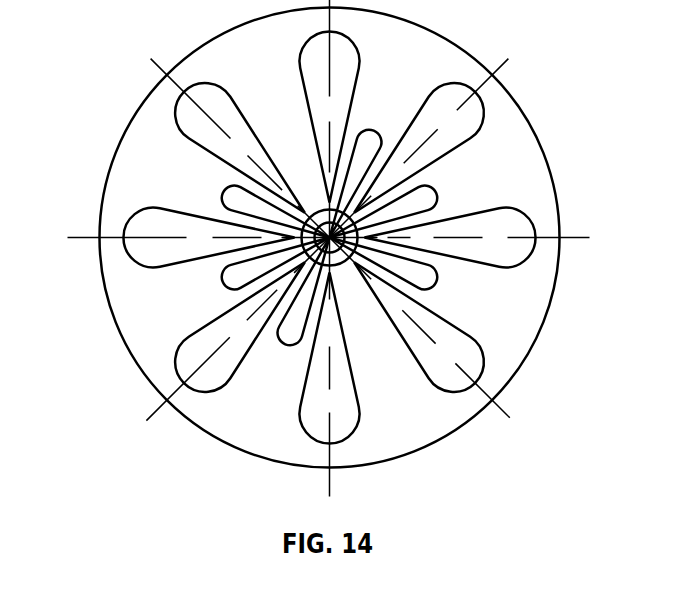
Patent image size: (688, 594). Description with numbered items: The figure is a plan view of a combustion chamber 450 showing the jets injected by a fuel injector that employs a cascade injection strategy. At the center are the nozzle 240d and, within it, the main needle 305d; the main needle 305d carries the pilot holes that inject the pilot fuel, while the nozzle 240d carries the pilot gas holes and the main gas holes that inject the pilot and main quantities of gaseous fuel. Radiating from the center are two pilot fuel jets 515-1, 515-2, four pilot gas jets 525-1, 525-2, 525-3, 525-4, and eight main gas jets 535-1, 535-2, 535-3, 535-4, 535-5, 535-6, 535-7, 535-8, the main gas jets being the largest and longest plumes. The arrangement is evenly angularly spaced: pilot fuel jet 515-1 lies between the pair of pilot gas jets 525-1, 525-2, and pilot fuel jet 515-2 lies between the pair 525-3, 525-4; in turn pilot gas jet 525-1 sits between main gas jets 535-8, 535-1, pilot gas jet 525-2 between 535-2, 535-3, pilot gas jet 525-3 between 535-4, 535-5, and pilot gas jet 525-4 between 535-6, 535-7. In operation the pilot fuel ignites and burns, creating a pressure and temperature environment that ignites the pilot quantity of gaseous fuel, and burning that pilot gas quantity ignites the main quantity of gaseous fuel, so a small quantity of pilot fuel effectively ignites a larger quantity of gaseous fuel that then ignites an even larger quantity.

The rotor assembly 450 is at (384, 456).
The nozzle 240d is at (325, 232).
The main needle 305d is at (333, 245).
The main gas jet 535-1 is at (467, 208).
The main gas jet 535-2 is at (457, 83).
The main gas jet 535-3 is at (305, 64).
The main gas jet 535-4 is at (184, 136).
The main gas jet 535-5 is at (140, 264).
The main gas jet 535-6 is at (196, 392).
The main gas jet 535-7 is at (358, 411).
The main gas jet 535-8 is at (497, 336).
The pilot fuel jet 515-1 is at (448, 186).
The pilot fuel jet 515-2 is at (215, 284).
The pilot gas jet 525-1 is at (437, 278).
The pilot gas jet 525-2 is at (368, 128).
The pilot gas jet 525-3 is at (236, 188).
The pilot gas jet 525-4 is at (286, 346).